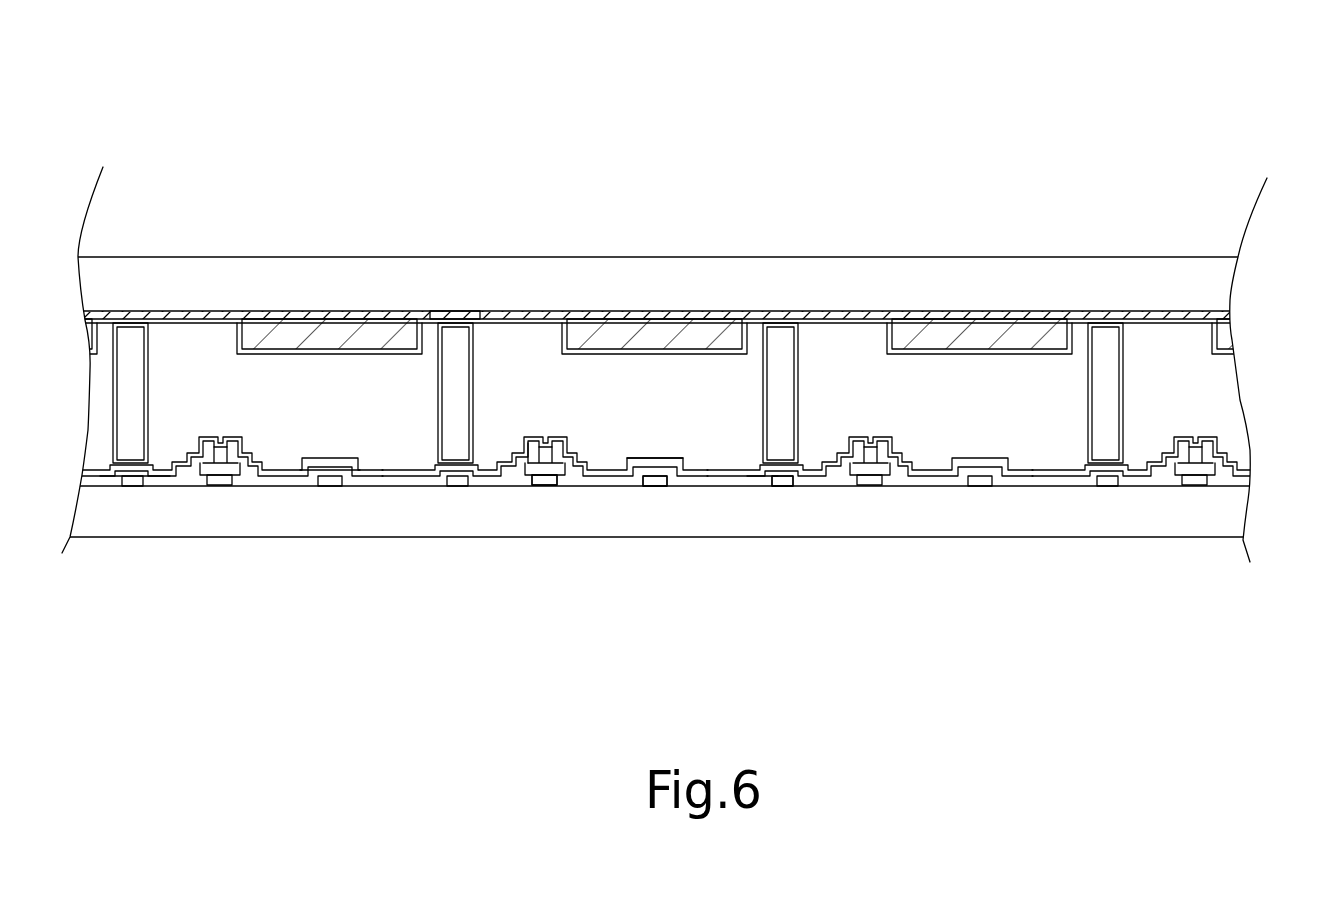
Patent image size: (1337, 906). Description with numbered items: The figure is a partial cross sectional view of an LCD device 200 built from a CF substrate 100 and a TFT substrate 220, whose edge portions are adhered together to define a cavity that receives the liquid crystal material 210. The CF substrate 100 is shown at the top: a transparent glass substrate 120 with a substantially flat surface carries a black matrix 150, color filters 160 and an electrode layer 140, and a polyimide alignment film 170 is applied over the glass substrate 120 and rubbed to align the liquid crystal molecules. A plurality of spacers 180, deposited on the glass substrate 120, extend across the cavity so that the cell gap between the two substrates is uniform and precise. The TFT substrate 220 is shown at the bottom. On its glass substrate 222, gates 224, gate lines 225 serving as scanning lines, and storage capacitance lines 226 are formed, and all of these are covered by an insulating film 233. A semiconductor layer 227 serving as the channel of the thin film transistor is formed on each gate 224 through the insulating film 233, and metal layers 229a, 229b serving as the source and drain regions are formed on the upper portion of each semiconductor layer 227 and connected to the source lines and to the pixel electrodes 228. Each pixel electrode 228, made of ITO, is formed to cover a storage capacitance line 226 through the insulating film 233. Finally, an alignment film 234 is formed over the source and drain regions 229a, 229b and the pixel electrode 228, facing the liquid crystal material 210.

The LCD device 200 is at (1202, 113).
The CF substrate 100 is at (1262, 257).
The glass substrate 120 is at (295, 270).
The electrode layer 140 is at (518, 312).
The black matrix 150 is at (465, 312).
The color filters 160 is at (652, 328).
The alignment film 170 is at (625, 352).
The spacer 180 is at (467, 395).
The liquid crystal material 210 is at (1240, 423).
The TFT substrate 220 is at (1276, 437).
The glass substrate 222 is at (1108, 525).
The gates 224 is at (537, 477).
The gate lines 225 is at (778, 483).
The storage capacitance lines 226 is at (658, 483).
The semiconductor layer 227 is at (518, 477).
The pixel electrode 228 is at (617, 477).
The metal layer 229a is at (158, 483).
The metal layer 229b is at (255, 483).
The insulating film 233 is at (752, 480).
The alignment film 234 is at (310, 483).